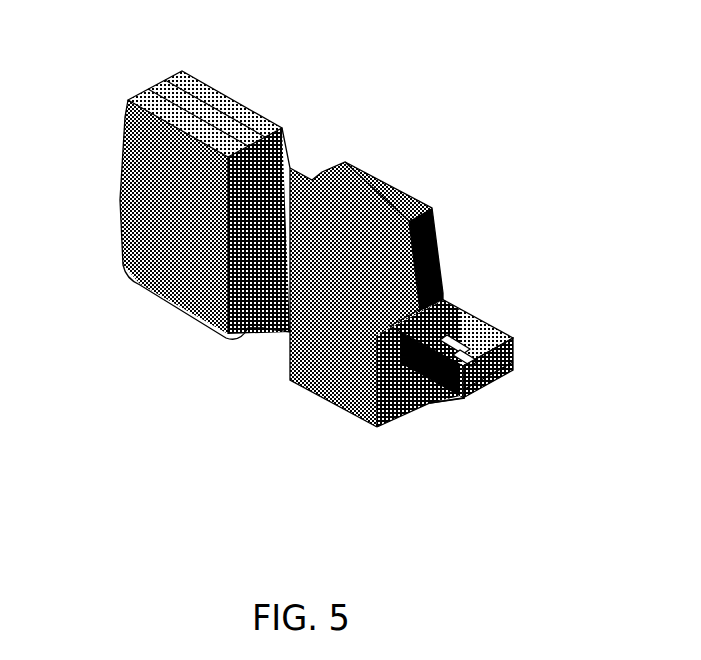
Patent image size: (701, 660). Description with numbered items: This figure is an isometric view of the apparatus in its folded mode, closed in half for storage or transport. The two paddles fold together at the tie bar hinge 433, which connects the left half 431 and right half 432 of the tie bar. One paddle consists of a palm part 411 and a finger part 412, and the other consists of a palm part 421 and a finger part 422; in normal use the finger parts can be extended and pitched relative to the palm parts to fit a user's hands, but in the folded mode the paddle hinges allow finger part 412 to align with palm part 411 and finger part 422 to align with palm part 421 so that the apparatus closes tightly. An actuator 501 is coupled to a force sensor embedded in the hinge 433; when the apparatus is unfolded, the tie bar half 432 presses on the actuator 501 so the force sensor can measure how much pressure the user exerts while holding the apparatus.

The palm part 411 is at (130, 100).
The palm part 421 is at (187, 72).
The finger part 412 is at (383, 430).
The finger part 422 is at (410, 408).
The left half 431 is at (465, 403).
The right half 432 is at (513, 334).
The hinge 433 is at (498, 387).
The actuator 501 is at (487, 392).